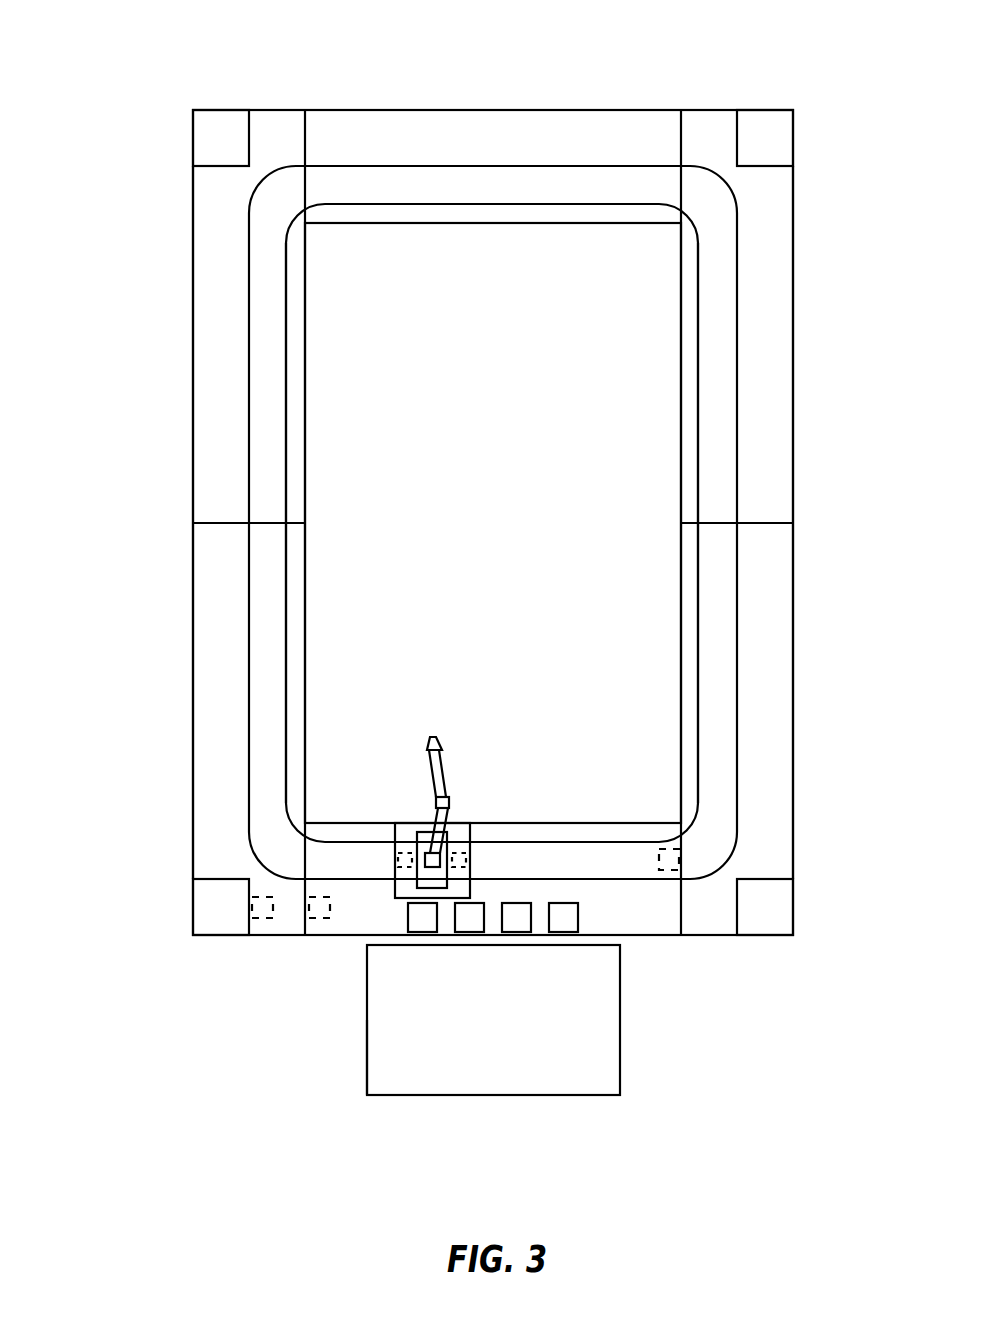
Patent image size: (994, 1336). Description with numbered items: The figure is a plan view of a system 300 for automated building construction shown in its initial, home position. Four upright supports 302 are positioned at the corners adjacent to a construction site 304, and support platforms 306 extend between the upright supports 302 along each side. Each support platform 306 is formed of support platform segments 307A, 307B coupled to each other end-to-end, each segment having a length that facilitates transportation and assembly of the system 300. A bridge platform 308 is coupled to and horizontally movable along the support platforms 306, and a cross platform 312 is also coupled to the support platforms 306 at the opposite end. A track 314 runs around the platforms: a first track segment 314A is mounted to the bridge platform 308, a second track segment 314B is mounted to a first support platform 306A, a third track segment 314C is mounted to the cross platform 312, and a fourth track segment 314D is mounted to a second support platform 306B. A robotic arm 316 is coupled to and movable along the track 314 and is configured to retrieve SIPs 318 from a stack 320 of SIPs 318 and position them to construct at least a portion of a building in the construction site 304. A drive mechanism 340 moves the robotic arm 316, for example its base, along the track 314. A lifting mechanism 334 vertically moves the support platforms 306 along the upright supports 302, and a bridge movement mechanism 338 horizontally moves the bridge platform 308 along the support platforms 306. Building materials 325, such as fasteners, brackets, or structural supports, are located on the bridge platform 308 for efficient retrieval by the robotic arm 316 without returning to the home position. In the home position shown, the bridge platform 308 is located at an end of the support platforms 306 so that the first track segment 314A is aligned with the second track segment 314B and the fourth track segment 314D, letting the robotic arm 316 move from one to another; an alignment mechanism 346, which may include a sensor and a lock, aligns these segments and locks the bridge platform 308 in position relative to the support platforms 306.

The system for automated building construction 300 is at (112, 59).
The upright supports 302 is at (193, 146).
The construction site 304 is at (492, 368).
The support platforms 306 is at (193, 308).
The first support platform 306A is at (193, 364).
The second support platform 306B is at (793, 364).
The support platform segment 307A is at (193, 467).
The support platform segment 307B is at (193, 580).
The bridge platform 308 is at (577, 822).
The cross platform 312 is at (590, 110).
The track 314 is at (698, 422).
The first track segment 314A is at (512, 840).
The second track segment 314B is at (286, 497).
The third track segment 314C is at (380, 205).
The fourth track segment 314D is at (698, 496).
The robotic arm 316 is at (430, 735).
The SIPs 318 is at (620, 1080).
The stack of SIPs 320 is at (348, 1057).
The building materials 325 is at (597, 920).
The lifting mechanism 334 is at (270, 920).
The bridge movement mechanism 338 is at (327, 920).
The drive mechanism 340 is at (410, 853).
The alignment mechanism 346 is at (676, 858).